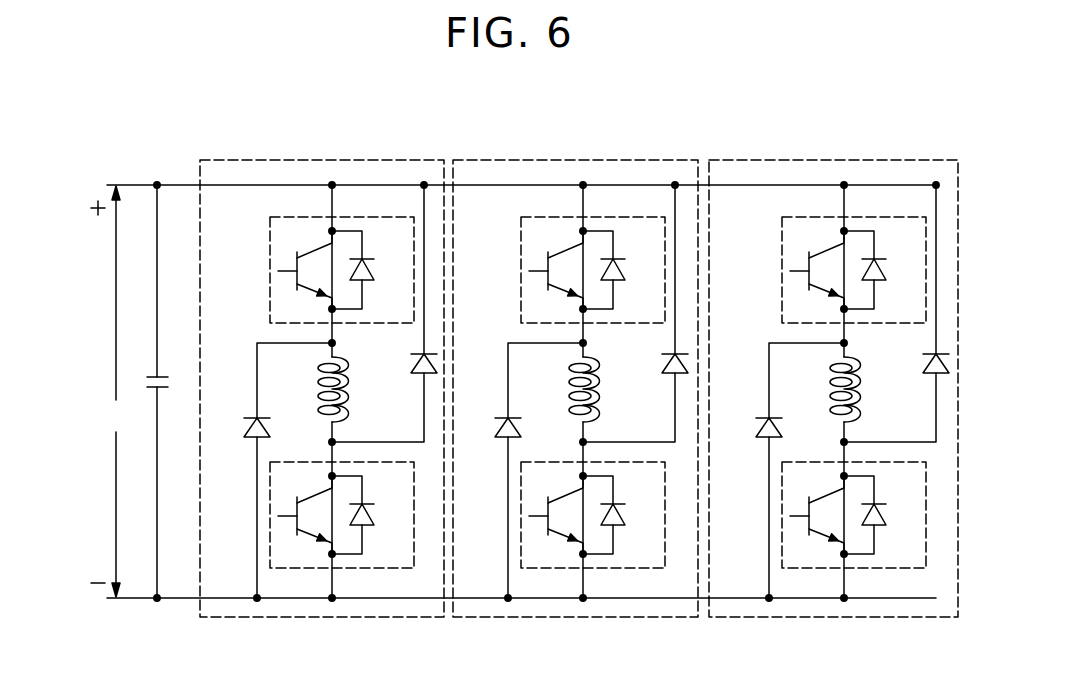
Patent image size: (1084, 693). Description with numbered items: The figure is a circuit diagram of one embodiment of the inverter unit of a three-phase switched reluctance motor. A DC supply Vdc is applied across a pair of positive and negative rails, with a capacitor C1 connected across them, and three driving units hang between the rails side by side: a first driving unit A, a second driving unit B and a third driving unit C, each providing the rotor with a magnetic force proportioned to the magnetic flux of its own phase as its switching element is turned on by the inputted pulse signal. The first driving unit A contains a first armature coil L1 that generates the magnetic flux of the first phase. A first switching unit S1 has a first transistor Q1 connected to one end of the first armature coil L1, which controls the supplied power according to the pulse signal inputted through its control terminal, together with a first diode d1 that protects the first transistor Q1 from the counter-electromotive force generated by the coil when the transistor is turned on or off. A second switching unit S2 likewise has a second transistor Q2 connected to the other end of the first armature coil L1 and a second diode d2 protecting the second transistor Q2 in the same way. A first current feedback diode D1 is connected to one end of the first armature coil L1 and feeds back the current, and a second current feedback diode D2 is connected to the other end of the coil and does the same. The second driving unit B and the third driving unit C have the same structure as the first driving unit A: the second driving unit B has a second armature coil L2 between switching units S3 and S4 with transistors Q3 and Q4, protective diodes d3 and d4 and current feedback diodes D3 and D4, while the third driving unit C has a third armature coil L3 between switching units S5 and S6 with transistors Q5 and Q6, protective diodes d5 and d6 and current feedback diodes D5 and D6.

The first driving unit A is at (306, 159).
The second driving unit B is at (559, 159).
The third driving unit C is at (816, 159).
The DC voltage source Vdc is at (113, 391).
The DC link capacitor C1 is at (171, 391).
The first switching unit S1 is at (268, 270).
The second switching unit S2 is at (268, 516).
The switching element S3 is at (519, 270).
The switching element S4 is at (519, 516).
The switching element S5 is at (780, 270).
The switching element S6 is at (780, 516).
The first transistor Q1 is at (305, 275).
The second transistor Q2 is at (305, 520).
The transistor Q3 is at (556, 275).
The transistor Q4 is at (556, 520).
The transistor Q5 is at (817, 275).
The transistor Q6 is at (817, 520).
The first diode d1 is at (371, 270).
The second diode d2 is at (371, 515).
The antiparallel diode d3 is at (622, 270).
The antiparallel diode d4 is at (622, 515).
The antiparallel diode d5 is at (883, 270).
The antiparallel diode d6 is at (883, 515).
The first current feedback diode D1 is at (268, 470).
The clamp diode D2 is at (384, 313).
The clamp diode D3 is at (539, 470).
The clamp diode D4 is at (635, 313).
The clamp diode D5 is at (800, 470).
The clamp diode D6 is at (896, 313).
The first armature coil L1 is at (349, 389).
The inductor L2 is at (600, 389).
The inductor L3 is at (861, 389).